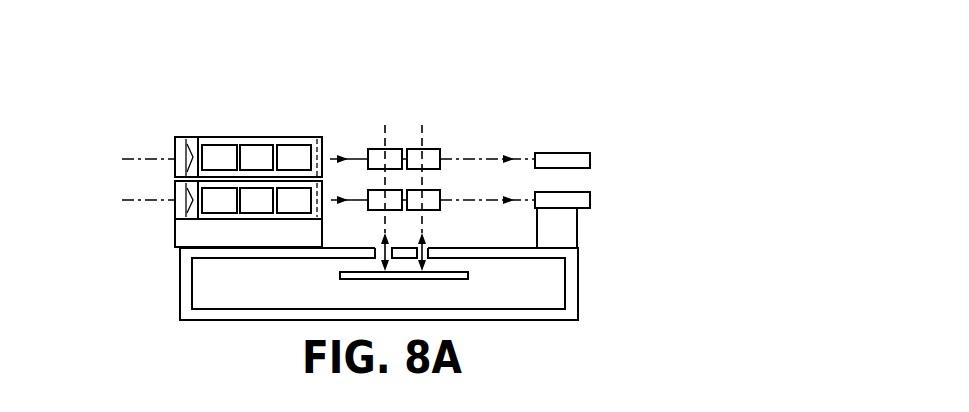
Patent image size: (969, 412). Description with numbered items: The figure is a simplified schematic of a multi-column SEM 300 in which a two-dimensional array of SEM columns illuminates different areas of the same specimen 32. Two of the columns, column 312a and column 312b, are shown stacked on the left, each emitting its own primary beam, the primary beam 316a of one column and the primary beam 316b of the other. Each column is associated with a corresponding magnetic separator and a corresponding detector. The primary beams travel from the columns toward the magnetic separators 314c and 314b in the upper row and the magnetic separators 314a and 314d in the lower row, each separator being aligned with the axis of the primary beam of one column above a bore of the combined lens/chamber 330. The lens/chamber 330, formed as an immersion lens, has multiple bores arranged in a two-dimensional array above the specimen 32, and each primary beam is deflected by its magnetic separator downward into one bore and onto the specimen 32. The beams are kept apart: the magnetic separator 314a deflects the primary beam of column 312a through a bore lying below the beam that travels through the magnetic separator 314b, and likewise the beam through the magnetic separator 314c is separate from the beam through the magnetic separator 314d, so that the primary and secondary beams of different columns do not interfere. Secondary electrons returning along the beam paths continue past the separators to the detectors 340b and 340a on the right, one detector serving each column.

The multi-column SEM 300 is at (130, 82).
The SEM column 312a is at (177, 212).
The SEM column 312b is at (177, 153).
The primary beam 316a is at (330, 159).
The primary beam 316b is at (331, 200).
The magnetic separator 314a is at (382, 211).
The magnetic separator 314b is at (430, 157).
The magnetic separator 314c is at (380, 156).
The magnetic separator 314d is at (427, 205).
The detector 340a is at (582, 200).
The detector 340b is at (582, 160).
The combined lens/chamber 330 is at (178, 283).
The specimen 32 is at (460, 269).